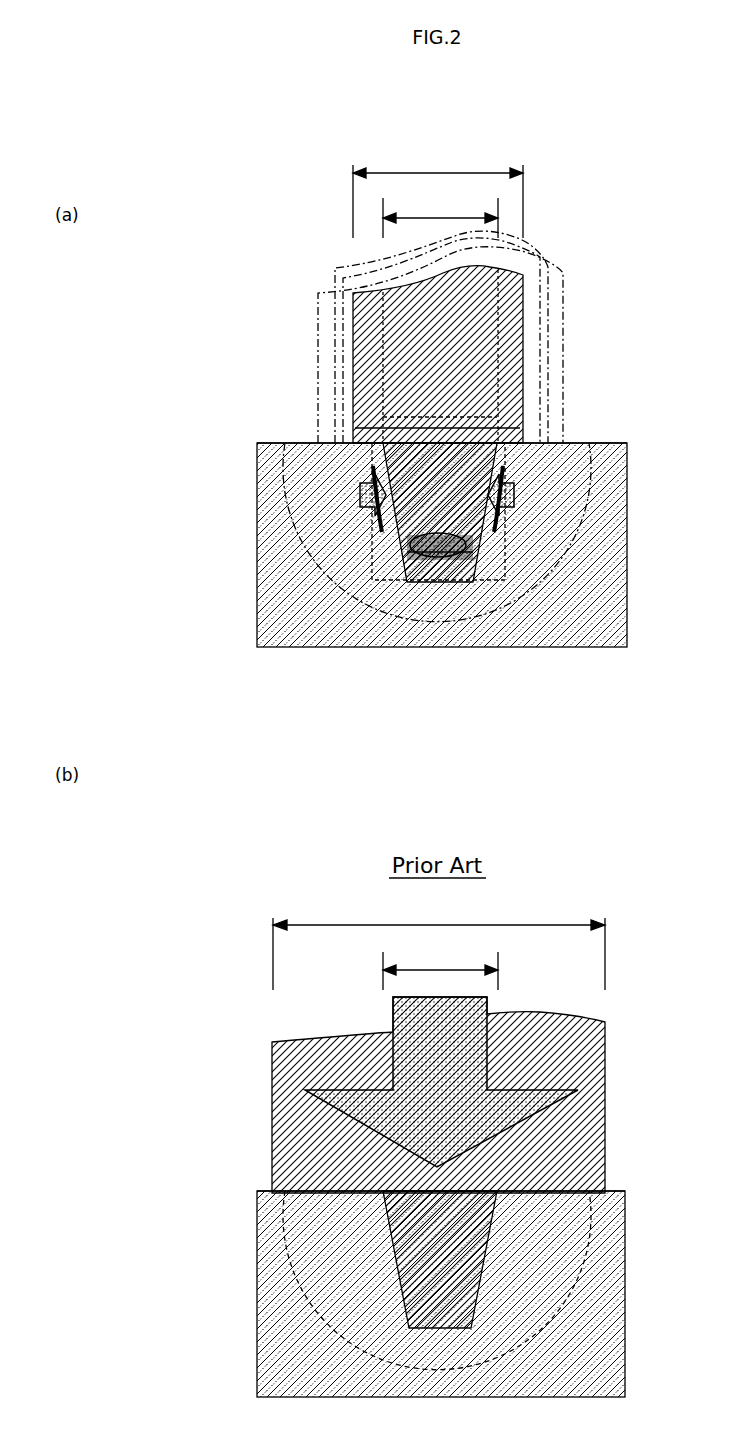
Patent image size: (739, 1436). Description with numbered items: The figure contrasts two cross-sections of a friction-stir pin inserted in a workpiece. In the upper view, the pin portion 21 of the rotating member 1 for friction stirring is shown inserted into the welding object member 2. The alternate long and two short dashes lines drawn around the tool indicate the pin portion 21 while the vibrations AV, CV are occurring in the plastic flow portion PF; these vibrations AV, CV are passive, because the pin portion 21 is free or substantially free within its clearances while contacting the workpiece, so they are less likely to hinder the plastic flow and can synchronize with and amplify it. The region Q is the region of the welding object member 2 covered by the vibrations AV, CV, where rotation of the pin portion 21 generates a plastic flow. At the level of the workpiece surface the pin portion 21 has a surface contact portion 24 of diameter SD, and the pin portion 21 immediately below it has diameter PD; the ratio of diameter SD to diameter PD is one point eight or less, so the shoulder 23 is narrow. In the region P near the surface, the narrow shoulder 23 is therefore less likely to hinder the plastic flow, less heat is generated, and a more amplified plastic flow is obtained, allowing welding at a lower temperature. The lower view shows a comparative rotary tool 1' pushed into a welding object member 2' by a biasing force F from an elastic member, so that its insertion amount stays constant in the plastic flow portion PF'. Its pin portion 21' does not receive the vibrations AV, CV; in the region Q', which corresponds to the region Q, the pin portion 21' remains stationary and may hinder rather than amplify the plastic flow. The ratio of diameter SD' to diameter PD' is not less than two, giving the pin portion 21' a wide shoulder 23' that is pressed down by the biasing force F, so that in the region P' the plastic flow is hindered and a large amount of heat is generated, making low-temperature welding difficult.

The rotating member for friction stirring 1 is at (481, 337).
The welding object member 2 is at (456, 545).
The pin portion 21 is at (361, 524).
The shoulder 23 is at (360, 503).
The surface contact portion 24 is at (367, 444).
The diameter of surface contact portion SD is at (438, 196).
The diameter of pin portion PD is at (440, 218).
The region near surface of welding object member P is at (425, 457).
The vibration of pin portion CV is at (377, 470).
The vibration of pin portion AV is at (432, 552).
The plastic flow portion PF is at (469, 532).
The region covered by vibrations Q is at (637, 629).
The rotary tool 1' is at (478, 1095).
The welding object member 2' is at (462, 1294).
The pin portion 21' is at (353, 1267).
The shoulder 23' is at (354, 1236).
The diameter of surface contact portion SD' is at (439, 946).
The diameter of pin portion PD' is at (440, 969).
The region near surface of welding object member P' is at (433, 1200).
The plastic flow portion PF' is at (478, 1280).
The region corresponding to region Q Q' is at (643, 1358).
The biasing force F is at (441, 1082).